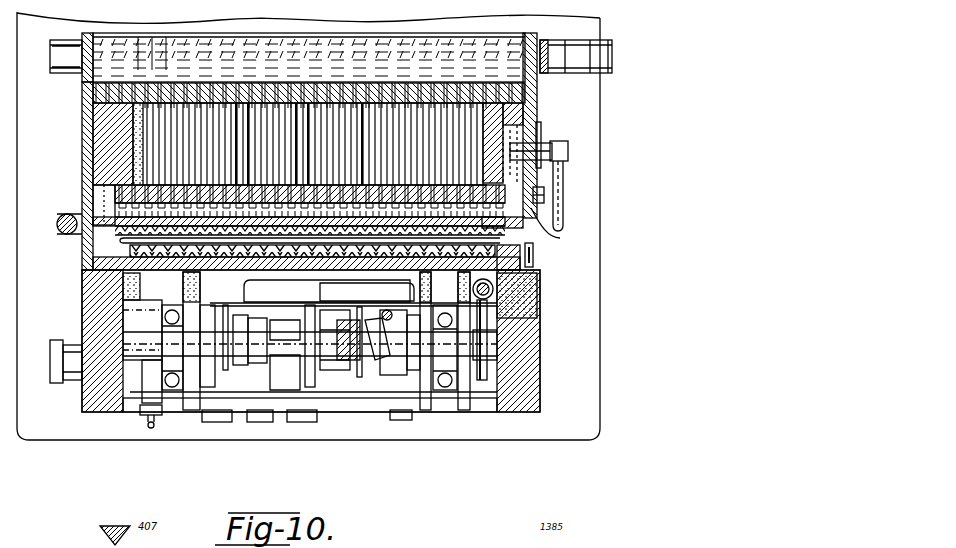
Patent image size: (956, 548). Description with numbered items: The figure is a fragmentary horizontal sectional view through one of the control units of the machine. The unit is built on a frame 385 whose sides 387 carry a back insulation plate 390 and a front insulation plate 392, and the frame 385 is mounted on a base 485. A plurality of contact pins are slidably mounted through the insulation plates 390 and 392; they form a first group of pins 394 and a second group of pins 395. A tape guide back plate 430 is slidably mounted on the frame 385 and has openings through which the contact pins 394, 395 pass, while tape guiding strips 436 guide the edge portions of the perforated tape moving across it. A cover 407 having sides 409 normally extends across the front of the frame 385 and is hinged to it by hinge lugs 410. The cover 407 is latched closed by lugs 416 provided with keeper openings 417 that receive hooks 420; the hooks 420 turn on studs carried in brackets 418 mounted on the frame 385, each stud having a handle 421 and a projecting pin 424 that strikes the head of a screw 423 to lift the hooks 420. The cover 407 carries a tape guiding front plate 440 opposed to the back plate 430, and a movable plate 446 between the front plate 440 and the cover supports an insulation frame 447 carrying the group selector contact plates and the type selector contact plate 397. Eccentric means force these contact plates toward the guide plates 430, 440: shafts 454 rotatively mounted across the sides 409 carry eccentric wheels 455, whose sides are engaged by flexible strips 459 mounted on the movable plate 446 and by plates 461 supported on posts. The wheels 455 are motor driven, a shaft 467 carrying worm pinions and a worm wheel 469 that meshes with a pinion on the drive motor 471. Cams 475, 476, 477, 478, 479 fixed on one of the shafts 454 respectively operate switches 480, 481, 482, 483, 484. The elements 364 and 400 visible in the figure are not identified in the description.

The roller 364 is at (613, 46).
The frame 385 is at (90, 128).
The sides 387 is at (90, 143).
The back insulation plate 390 is at (307, 84).
The front insulation plate 392 is at (192, 100).
The contact pins 394 is at (182, 98).
The contact pins 395 is at (243, 120).
The type selector contact plate 397 is at (100, 259).
The fabric roll 400 is at (88, 40).
The cover 407 is at (532, 380).
The sides 409 is at (525, 356).
The hinge lugs 410 is at (90, 186).
The lugs 416 is at (540, 292).
The keeper openings 417 is at (537, 263).
The brackets 418 is at (560, 177).
The hooks 420 is at (561, 230).
The handle 421 is at (564, 218).
The screws 423 is at (545, 193).
The projecting pins 424 is at (542, 135).
The tape guide back plate 430 is at (548, 203).
The tape guiding strips 436 is at (95, 241).
The tape guiding front plate 440 is at (362, 182).
The movable plate 446 is at (100, 268).
The insulation frame 447 is at (318, 272).
The shafts 454 is at (228, 400).
The eccentric wheels 455 is at (178, 405).
The flexible strips 459 is at (130, 300).
The plates 461 is at (145, 406).
The shaft 467 is at (524, 298).
The worm wheel 469 is at (494, 412).
The drive motor 471 is at (247, 288).
The cam 475 is at (217, 373).
The cam 476 is at (292, 403).
The cam 477 is at (343, 405).
The cam 478 is at (372, 412).
The cam 479 is at (420, 410).
The switch 480 is at (248, 397).
The switch 481 is at (240, 403).
The switch 482 is at (312, 400).
The switch 483 is at (335, 408).
The switch 484 is at (388, 405).
The base 485 is at (588, 421).